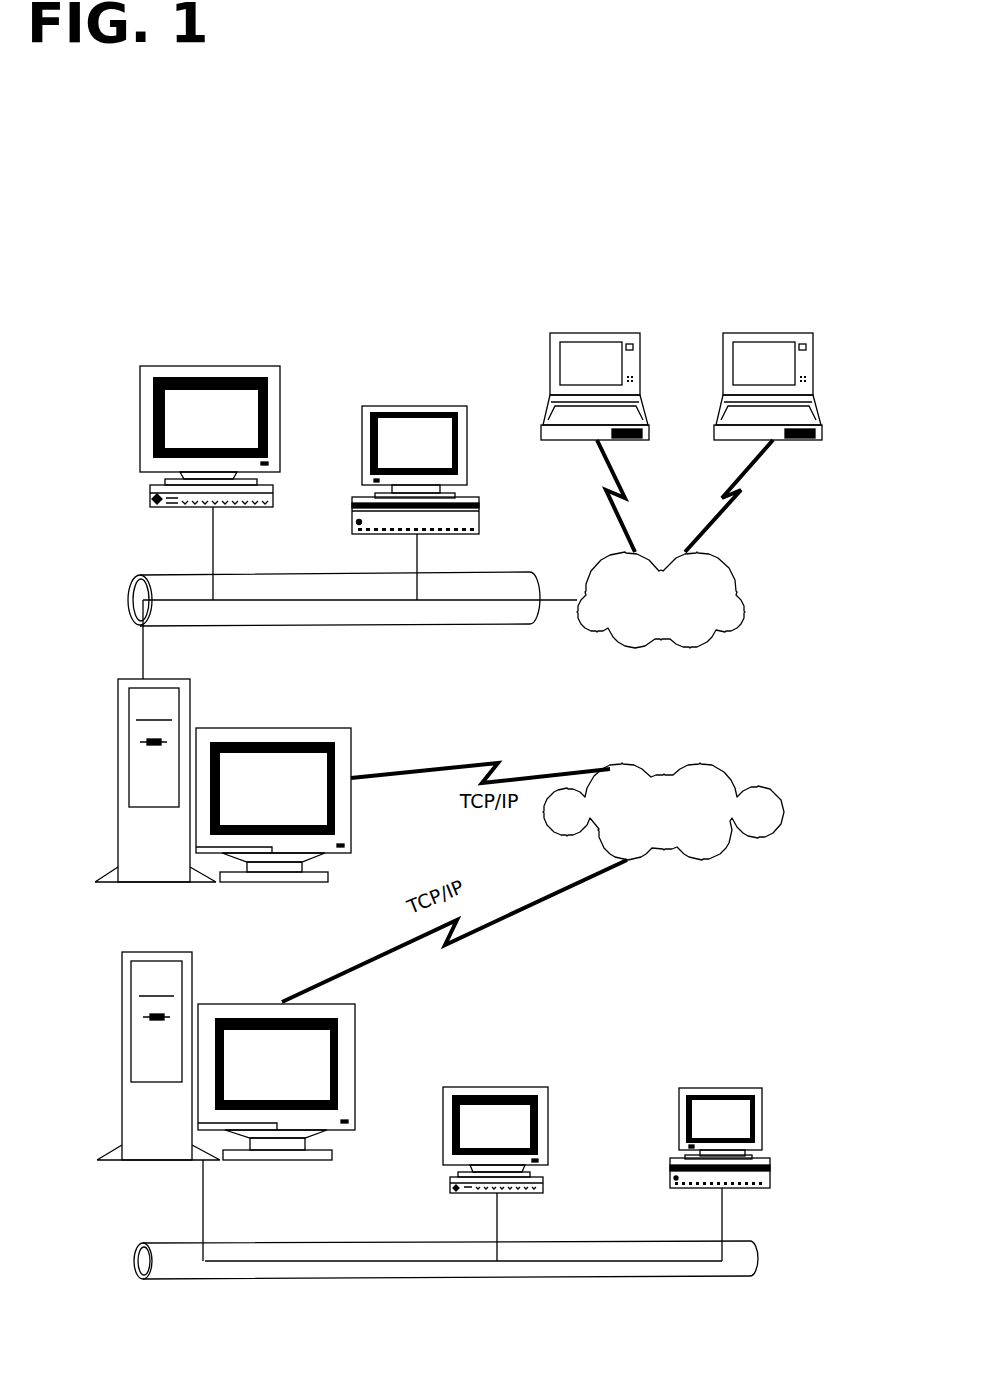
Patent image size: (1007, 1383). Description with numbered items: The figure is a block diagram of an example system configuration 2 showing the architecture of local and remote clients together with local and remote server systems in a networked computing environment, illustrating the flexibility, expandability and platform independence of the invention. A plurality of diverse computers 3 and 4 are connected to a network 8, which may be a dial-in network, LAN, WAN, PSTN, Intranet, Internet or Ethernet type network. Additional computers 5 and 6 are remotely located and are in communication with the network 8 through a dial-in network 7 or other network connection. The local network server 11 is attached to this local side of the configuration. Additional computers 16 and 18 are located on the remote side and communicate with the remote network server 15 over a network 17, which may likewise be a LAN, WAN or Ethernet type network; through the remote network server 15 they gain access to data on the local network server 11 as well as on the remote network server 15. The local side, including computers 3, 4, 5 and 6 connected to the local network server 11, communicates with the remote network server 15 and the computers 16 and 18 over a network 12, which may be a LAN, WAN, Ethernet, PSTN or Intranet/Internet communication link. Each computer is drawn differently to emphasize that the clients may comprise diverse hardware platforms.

The system configuration 2 is at (543, 229).
The computer 3 is at (140, 435).
The computer 4 is at (479, 503).
The computer 5 is at (640, 385).
The computer 6 is at (723, 385).
The dial-in network 7 is at (636, 648).
The network 8 is at (378, 625).
The local network server 11 is at (180, 680).
The network 12 is at (698, 763).
The remote network server 15 is at (215, 1003).
The computer 16 is at (548, 1123).
The network 17 is at (680, 1241).
The computer 18 is at (682, 1143).